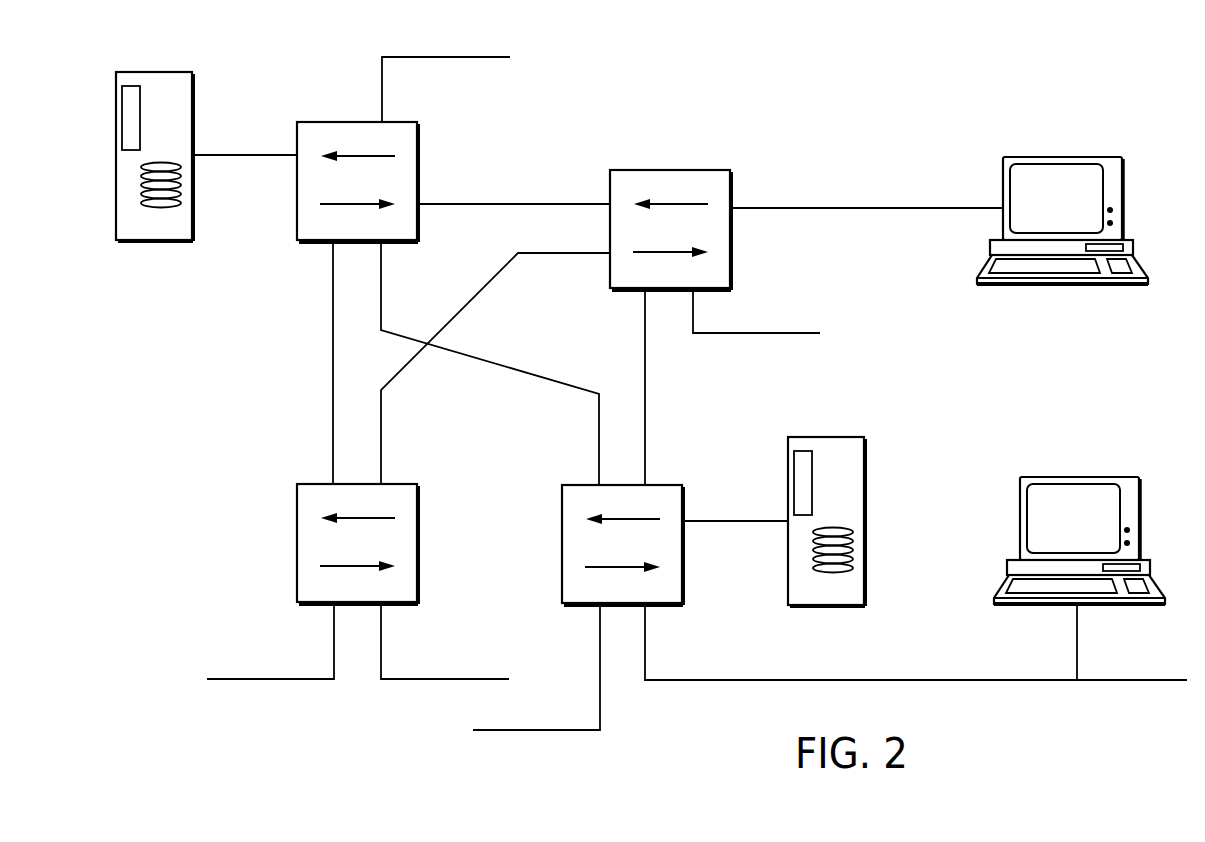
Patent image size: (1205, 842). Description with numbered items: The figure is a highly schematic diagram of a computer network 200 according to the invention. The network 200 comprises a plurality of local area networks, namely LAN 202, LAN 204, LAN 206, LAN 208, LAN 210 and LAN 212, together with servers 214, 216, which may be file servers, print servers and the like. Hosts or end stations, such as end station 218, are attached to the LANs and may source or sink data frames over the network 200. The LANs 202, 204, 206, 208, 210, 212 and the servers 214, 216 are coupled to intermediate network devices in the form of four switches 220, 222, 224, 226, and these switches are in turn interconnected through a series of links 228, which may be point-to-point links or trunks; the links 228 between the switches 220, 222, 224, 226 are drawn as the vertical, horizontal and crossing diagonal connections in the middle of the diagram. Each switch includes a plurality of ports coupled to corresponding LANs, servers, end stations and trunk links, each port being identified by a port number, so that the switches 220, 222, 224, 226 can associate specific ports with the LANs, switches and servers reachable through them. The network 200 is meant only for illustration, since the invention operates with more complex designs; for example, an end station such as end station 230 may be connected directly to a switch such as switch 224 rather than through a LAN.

The computer network 200 is at (723, 55).
The local area network 202 is at (270, 641).
The local area network 204 is at (445, 641).
The local area network 206 is at (535, 667).
The local area network 208 is at (916, 642).
The local area network 210 is at (446, 73).
The local area network 212 is at (756, 310).
The server 214 is at (192, 99).
The server 216 is at (864, 472).
The end station 218 is at (1138, 515).
The switch 220 is at (418, 542).
The switch 222 is at (562, 542).
The switch 224 is at (417, 152).
The switch 226 is at (730, 250).
The link 228 is at (553, 202).
The end station 230 is at (1122, 188).